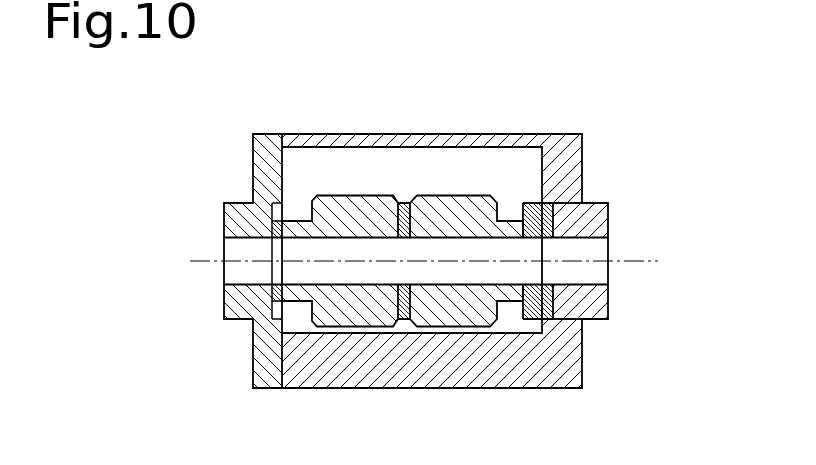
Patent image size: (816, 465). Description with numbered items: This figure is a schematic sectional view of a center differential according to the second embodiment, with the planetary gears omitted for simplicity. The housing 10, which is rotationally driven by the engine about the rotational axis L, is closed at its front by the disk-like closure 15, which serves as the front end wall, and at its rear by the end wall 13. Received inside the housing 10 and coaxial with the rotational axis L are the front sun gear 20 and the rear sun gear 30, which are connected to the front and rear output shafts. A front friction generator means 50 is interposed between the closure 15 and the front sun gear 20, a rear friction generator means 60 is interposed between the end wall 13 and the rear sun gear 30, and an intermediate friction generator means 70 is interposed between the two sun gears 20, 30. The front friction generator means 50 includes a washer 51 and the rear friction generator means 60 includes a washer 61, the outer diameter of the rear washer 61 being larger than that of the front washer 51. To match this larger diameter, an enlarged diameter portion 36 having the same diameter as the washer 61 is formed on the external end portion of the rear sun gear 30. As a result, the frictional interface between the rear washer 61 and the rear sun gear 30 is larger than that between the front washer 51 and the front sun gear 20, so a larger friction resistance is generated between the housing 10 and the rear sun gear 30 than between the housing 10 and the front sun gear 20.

The housing 10 is at (443, 133).
The end wall 13 is at (583, 157).
The closure 15 is at (253, 171).
The front sun gear 20 is at (353, 303).
The rear sun gear 30 is at (462, 303).
The enlarged diameter portion 36 is at (533, 203).
The front friction generator means 50 is at (278, 211).
The washer 51 is at (271, 222).
The rear friction generator means 60 is at (566, 303).
The washer 61 is at (550, 204).
The intermediate friction generator means 70 is at (403, 319).
The rotational axis L is at (635, 260).